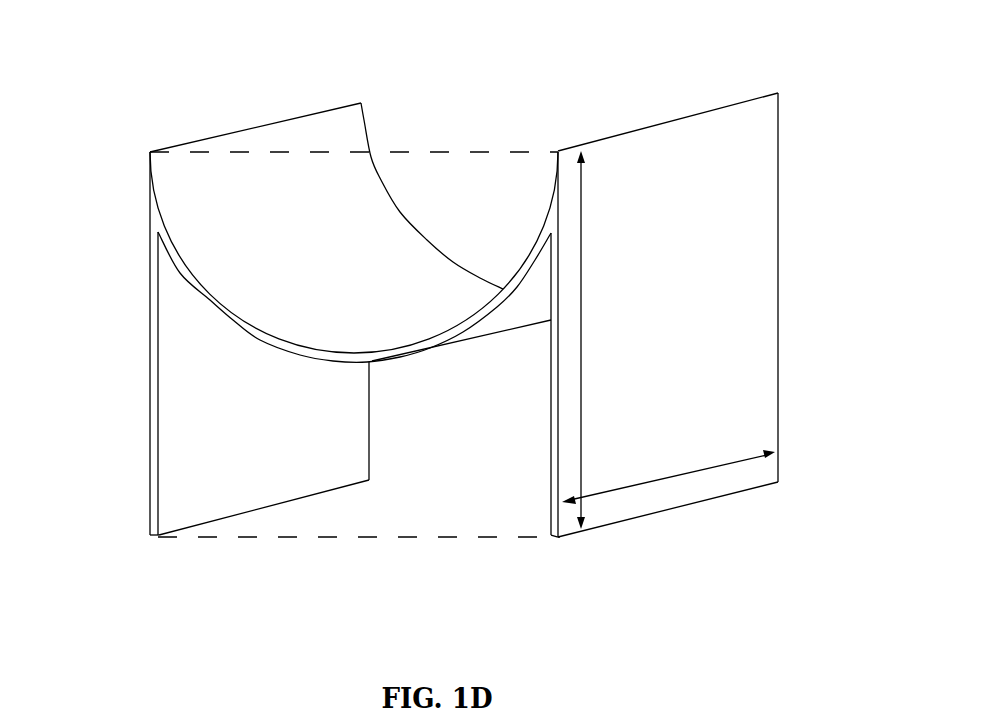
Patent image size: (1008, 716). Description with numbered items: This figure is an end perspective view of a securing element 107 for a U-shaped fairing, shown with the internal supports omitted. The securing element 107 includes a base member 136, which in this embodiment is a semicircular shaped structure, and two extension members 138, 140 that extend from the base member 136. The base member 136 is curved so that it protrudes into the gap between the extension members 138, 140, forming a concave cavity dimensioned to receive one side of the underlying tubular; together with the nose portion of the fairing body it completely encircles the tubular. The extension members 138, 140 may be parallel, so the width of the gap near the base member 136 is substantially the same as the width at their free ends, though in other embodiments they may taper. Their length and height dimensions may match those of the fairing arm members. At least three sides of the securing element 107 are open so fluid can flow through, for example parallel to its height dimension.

The securing element 107 is at (202, 129).
The base member 136 is at (398, 370).
The extension member 138 is at (760, 434).
The extension member 140 is at (170, 455).